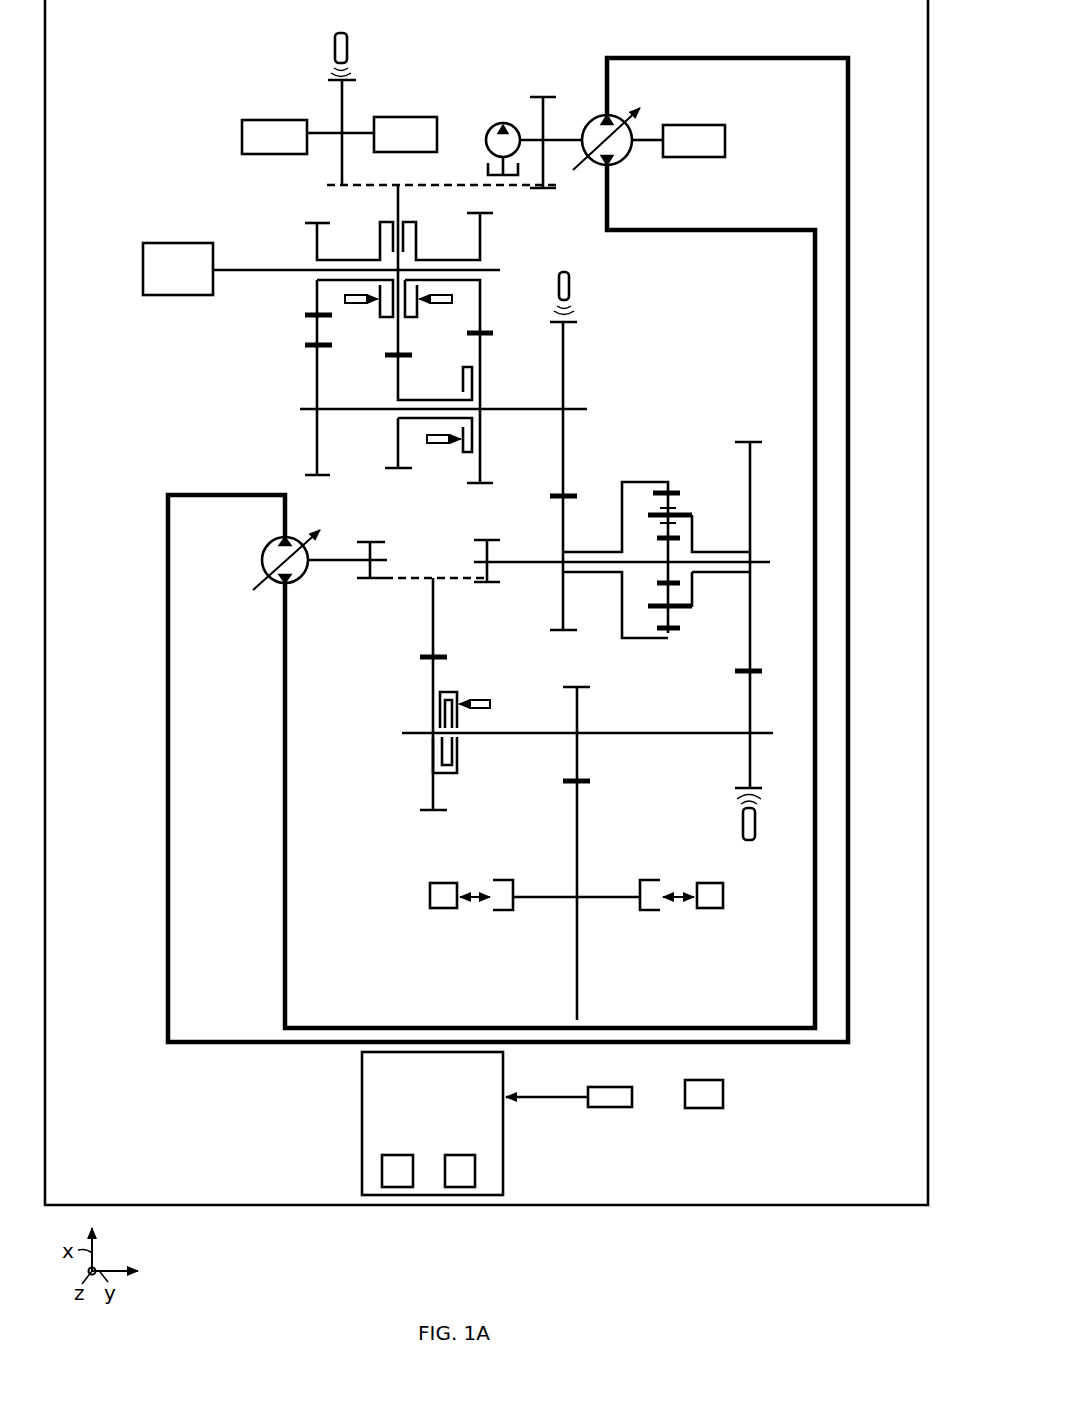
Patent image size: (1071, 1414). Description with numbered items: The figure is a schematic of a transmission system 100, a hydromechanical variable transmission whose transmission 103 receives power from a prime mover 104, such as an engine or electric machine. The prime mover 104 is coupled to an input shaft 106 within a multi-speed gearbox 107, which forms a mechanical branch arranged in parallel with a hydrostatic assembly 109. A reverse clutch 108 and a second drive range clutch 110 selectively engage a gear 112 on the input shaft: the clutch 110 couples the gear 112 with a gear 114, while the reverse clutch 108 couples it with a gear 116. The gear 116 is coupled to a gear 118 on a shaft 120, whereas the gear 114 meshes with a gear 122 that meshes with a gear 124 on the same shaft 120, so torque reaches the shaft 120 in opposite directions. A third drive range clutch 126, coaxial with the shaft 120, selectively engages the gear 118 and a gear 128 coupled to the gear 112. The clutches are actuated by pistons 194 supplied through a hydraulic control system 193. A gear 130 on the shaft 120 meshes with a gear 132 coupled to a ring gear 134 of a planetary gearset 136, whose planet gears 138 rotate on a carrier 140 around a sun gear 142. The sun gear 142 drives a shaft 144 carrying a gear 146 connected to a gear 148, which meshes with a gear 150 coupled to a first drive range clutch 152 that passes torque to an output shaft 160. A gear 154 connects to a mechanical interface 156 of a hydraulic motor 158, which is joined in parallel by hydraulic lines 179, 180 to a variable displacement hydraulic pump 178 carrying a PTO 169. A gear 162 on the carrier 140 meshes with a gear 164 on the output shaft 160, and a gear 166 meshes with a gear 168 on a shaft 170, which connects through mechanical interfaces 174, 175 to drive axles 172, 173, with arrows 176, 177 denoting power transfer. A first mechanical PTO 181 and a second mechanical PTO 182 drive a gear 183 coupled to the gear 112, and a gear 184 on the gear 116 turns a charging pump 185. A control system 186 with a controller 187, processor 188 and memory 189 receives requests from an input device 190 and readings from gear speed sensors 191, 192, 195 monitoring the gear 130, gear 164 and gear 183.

The transmission system 100 is at (105, 53).
The transmission 103 is at (173, 88).
The prime mover 104 is at (143, 272).
The input shaft 106 is at (252, 269).
The multi-speed gearbox 107 is at (216, 186).
The reverse clutch 108 is at (470, 224).
The hydrostatic assembly 109 is at (863, 52).
The clutch 110 is at (368, 242).
The gear 112 is at (398, 185).
The gear 114 is at (305, 222).
The gear 116 is at (483, 213).
The gear 118 is at (493, 352).
The shaft 120 is at (536, 408).
The gear 122 is at (305, 331).
The gear 124 is at (316, 382).
The clutch 126 is at (458, 384).
The gear 128 is at (385, 362).
The gear 130 is at (567, 348).
The gear 132 is at (561, 516).
The ring gear 134 is at (673, 491).
The planetary gearset 136 is at (652, 465).
The planet gears 138 is at (682, 511).
The carrier 140 is at (698, 524).
The sun gear 142 is at (662, 550).
The shaft 144 is at (526, 566).
The gear 146 is at (486, 540).
The gear 148 is at (433, 578).
The gear 150 is at (420, 660).
The clutch 152 is at (413, 753).
The gear 154 is at (371, 541).
The mechanical interface 156 is at (337, 563).
The hydraulic motor 158 is at (250, 561).
The output shaft 160 is at (508, 732).
The gear 162 is at (752, 441).
The gear 164 is at (745, 680).
The gear 166 is at (580, 686).
The gear 168 is at (563, 784).
The PTO 169 is at (697, 125).
The shaft 170 is at (545, 896).
The drive axle 172 is at (430, 894).
The drive axle 173 is at (724, 894).
The mechanical interface 174 is at (503, 912).
The mechanical interface 175 is at (648, 912).
The arrow 176 is at (483, 904).
The arrow 177 is at (672, 905).
The variable displacement hydraulic pump 178 is at (598, 118).
The hydraulic line 179 is at (704, 57).
The hydraulic line 180 is at (790, 228).
The first mechanical PTO 181 is at (277, 120).
The second mechanical PTO 182 is at (408, 117).
The gear 183 is at (330, 78).
The gear 184 is at (543, 96).
The charging pump 185 is at (488, 128).
The control system 186 is at (290, 1145).
The controller 187 is at (432, 1123).
The processor 188 is at (382, 1172).
The memory 189 is at (475, 1172).
The input device 190 is at (608, 1087).
The gear speed sensor 191 is at (572, 289).
The gear speed sensor 192 is at (742, 825).
The hydraulic control system 193 is at (702, 1108).
The pistons 194 is at (355, 303).
The gear speed sensor 195 is at (352, 44).